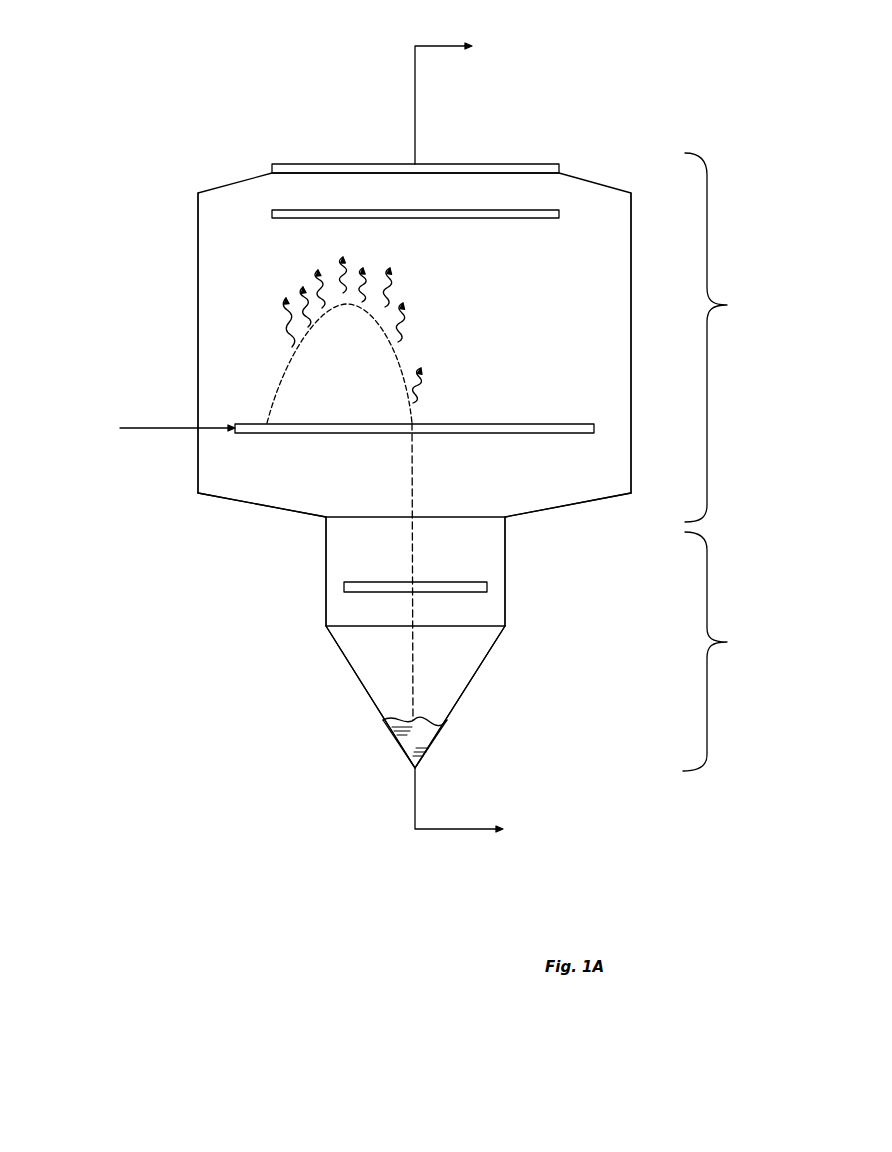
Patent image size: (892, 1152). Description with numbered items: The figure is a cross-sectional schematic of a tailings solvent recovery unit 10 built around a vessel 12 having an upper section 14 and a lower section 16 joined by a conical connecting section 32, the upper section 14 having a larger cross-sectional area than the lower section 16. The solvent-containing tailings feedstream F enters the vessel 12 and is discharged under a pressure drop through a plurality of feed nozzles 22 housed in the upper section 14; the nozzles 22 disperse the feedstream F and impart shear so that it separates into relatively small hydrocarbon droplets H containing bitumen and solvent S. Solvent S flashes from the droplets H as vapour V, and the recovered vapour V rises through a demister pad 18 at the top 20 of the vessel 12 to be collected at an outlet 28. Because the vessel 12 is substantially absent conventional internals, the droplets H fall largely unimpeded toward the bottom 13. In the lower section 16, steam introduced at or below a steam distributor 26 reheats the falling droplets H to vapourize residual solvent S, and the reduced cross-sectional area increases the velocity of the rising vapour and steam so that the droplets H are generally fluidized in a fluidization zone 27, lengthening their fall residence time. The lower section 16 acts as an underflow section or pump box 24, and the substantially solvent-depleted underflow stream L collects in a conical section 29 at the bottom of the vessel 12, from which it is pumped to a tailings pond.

The tailings solvent recovery unit 10 is at (715, 163).
The vessel 12 is at (238, 181).
The bottom 13 is at (394, 737).
The upper section 14 is at (718, 337).
The lower section 16 is at (717, 651).
The demister pad 18 is at (487, 218).
The top 20 is at (198, 212).
The feed nozzles 22 is at (582, 424).
The pump box 24 is at (346, 658).
The steam distributor 26 is at (360, 583).
The fluidization zone 27 is at (415, 571).
The outlet 28 is at (395, 163).
The conical section 29 is at (458, 702).
The conical connecting section 32 is at (565, 509).
The vapour V is at (438, 44).
The feedstream F is at (160, 428).
The hydrocarbon droplets H is at (280, 379).
The solvent S is at (353, 321).
The underflow stream L is at (470, 830).